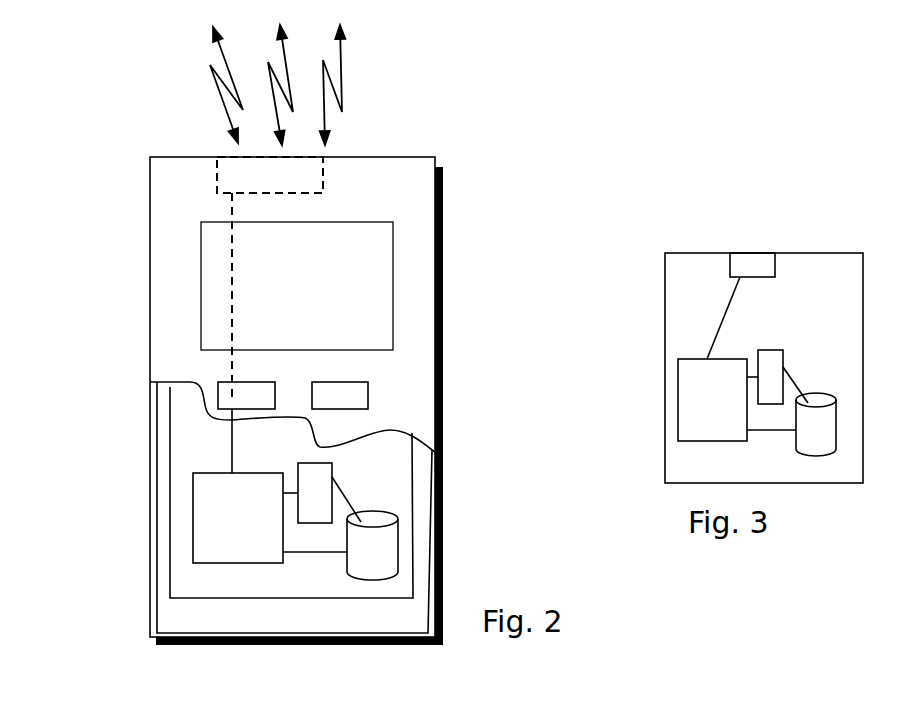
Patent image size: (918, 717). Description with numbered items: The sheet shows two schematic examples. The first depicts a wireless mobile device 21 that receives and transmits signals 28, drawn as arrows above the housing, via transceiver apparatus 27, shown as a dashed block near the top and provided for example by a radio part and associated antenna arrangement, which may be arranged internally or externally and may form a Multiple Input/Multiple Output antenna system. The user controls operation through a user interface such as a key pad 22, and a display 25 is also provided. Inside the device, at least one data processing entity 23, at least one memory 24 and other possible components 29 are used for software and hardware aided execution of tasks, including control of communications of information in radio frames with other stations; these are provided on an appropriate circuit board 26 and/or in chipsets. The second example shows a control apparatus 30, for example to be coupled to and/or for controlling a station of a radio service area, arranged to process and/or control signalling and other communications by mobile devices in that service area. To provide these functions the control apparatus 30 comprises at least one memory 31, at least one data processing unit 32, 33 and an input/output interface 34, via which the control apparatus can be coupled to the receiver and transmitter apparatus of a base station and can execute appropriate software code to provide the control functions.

In FIG. 2, the mobile device 21 is at (153, 197).
In FIG. 2, the key pad 22 is at (222, 395).
In FIG. 2, the data processing entity 23 is at (200, 502).
In FIG. 2, the memory 24 is at (367, 557).
In FIG. 2, the display 25 is at (217, 273).
In FIG. 2, the circuit board 26 is at (193, 583).
In FIG. 2, the transceiver apparatus 27 is at (223, 157).
In FIG. 2, the signals 28 is at (362, 101).
In FIG. 2, the other components 29 is at (315, 480).
In FIG. 3, the control apparatus 30 is at (645, 242).
In FIG. 3, the memory 31 is at (813, 448).
In FIG. 3, the data processing unit 32 is at (732, 415).
In FIG. 3, the data processing unit 33 is at (770, 357).
In FIG. 3, the input/output interface 34 is at (758, 268).